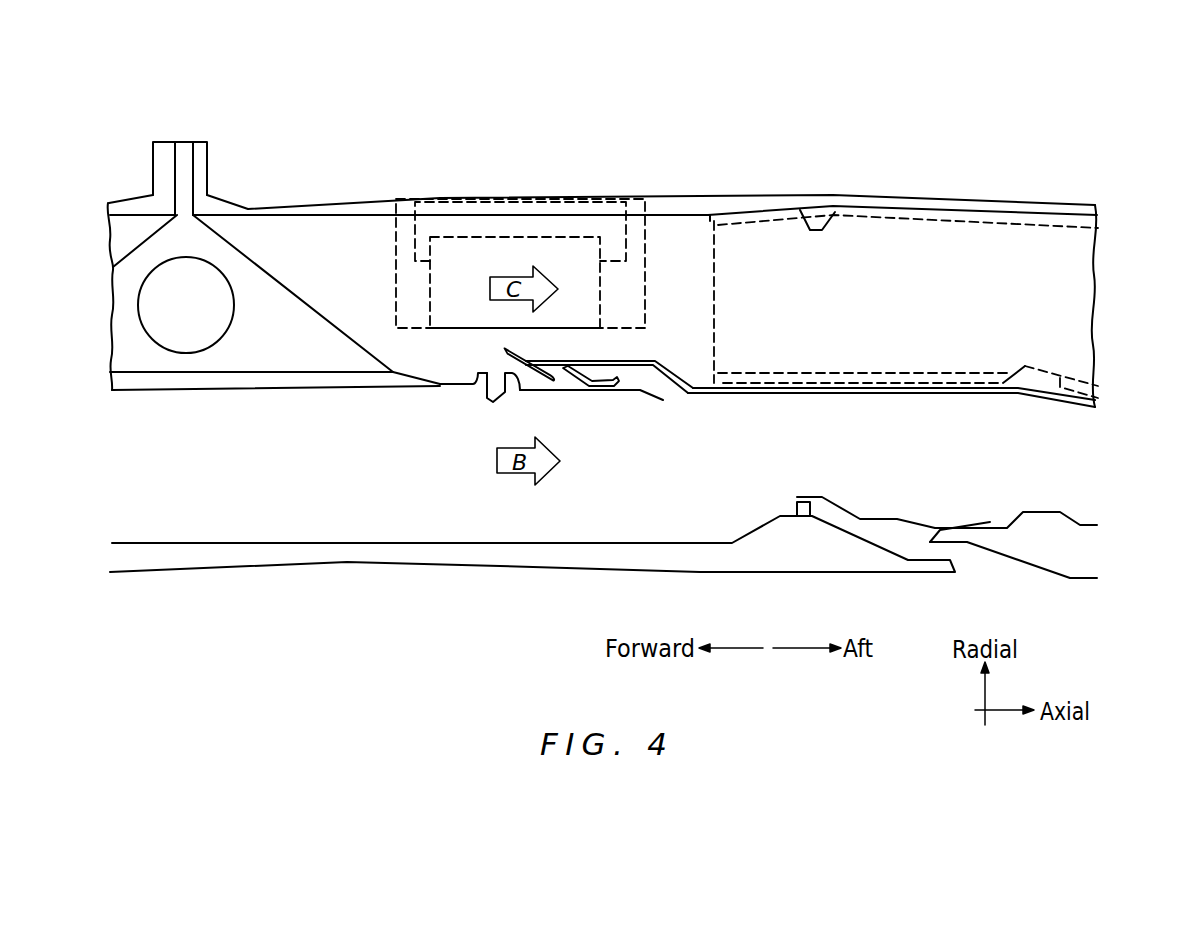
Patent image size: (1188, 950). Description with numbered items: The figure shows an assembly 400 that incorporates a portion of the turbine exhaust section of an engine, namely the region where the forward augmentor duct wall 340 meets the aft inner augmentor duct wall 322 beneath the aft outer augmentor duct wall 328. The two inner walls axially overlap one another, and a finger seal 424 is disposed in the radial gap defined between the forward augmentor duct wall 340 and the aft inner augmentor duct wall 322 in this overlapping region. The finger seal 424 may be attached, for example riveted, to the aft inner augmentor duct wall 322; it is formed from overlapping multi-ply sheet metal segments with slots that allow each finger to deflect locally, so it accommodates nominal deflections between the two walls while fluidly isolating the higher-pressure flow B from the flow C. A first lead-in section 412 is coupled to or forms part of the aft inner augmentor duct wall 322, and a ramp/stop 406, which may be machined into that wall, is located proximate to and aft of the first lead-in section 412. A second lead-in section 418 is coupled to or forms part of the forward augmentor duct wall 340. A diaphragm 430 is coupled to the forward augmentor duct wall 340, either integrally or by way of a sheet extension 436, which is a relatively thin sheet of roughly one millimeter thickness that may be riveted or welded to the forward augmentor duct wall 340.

The assembly 400 is at (1113, 164).
The aft outer augmentor duct wall 328 is at (982, 197).
The aft inner augmentor duct wall 322 is at (875, 395).
The forward augmentor duct wall 340 is at (333, 382).
The sheet extension 436 is at (463, 385).
The diaphragm 430 is at (489, 400).
The first lead-in section 412 is at (505, 350).
The ramp/stop 406 is at (549, 370).
The finger seal 424 is at (583, 390).
The second lead-in section 418 is at (648, 398).